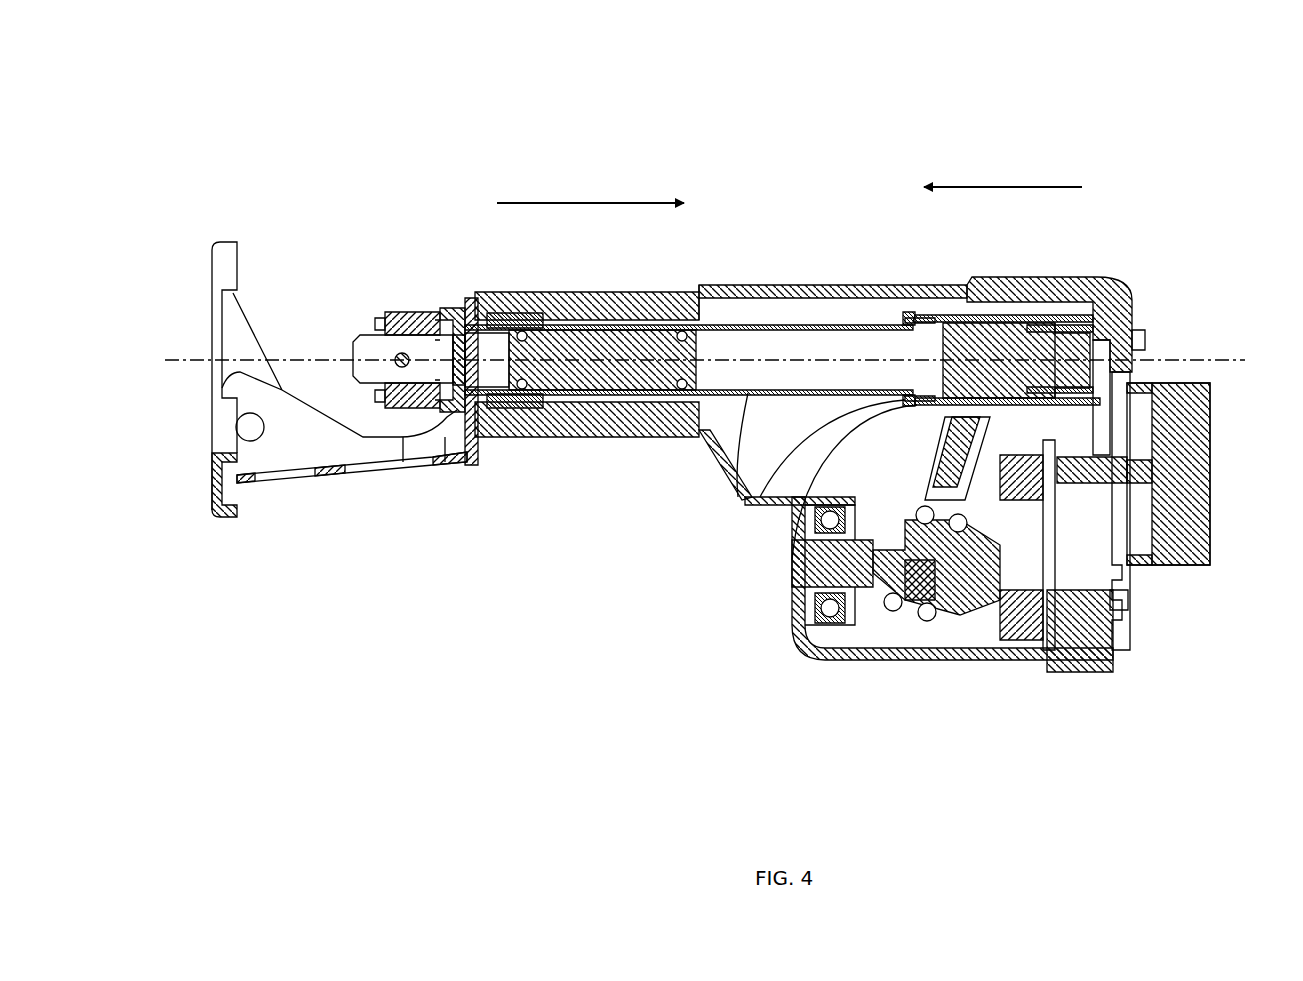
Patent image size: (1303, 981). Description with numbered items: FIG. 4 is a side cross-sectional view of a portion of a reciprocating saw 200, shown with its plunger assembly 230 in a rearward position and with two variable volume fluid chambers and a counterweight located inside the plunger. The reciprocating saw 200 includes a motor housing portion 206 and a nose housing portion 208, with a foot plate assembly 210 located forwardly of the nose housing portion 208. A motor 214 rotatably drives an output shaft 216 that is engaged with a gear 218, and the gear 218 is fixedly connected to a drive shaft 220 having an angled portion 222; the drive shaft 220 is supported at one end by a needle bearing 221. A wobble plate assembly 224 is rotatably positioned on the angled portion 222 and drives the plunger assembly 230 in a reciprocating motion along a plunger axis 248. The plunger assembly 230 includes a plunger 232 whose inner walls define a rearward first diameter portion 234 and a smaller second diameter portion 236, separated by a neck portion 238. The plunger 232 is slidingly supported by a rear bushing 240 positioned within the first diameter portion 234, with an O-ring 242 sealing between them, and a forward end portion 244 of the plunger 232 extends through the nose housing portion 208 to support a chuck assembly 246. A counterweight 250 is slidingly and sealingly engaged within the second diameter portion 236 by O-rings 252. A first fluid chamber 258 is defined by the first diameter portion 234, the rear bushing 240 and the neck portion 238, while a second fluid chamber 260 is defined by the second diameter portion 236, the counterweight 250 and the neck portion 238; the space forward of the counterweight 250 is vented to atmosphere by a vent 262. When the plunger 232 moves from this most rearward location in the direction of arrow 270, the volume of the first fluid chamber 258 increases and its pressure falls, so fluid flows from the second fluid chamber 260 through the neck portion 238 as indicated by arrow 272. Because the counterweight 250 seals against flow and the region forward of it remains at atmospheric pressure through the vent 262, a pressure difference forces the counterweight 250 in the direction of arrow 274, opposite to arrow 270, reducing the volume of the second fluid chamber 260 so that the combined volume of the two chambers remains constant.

The reciprocating saw 200 is at (497, 110).
The motor housing portion 206 is at (1128, 290).
The nose housing portion 208 is at (580, 440).
The foot plate assembly 210 is at (247, 262).
The motor 214 is at (1195, 383).
The output shaft 216 is at (1040, 400).
The gear 218 is at (1070, 660).
The drive shaft 220 is at (1128, 560).
The needle bearing 221 is at (1122, 610).
The angled portion 222 is at (950, 615).
The wobble plate assembly 224 is at (830, 625).
The plunger assembly 230 is at (690, 262).
The plunger 232 is at (715, 298).
The first diameter portion 234 is at (1078, 300).
The second diameter portion 236 is at (745, 490).
The neck portion 238 is at (795, 530).
The rear bushing 240 is at (1000, 323).
The O-ring 242 is at (945, 323).
The forward end portion 244 is at (455, 318).
The chuck assembly 246 is at (389, 312).
The plunger axis 248 is at (297, 358).
The counterweight 250 is at (560, 335).
The O-rings 252 is at (522, 332).
The first fluid chamber 258 is at (930, 318).
The second fluid chamber 260 is at (812, 356).
The vent 262 is at (471, 430).
The arrow 270 is at (965, 187).
The arrow 272 is at (932, 373).
The arrow 274 is at (650, 203).